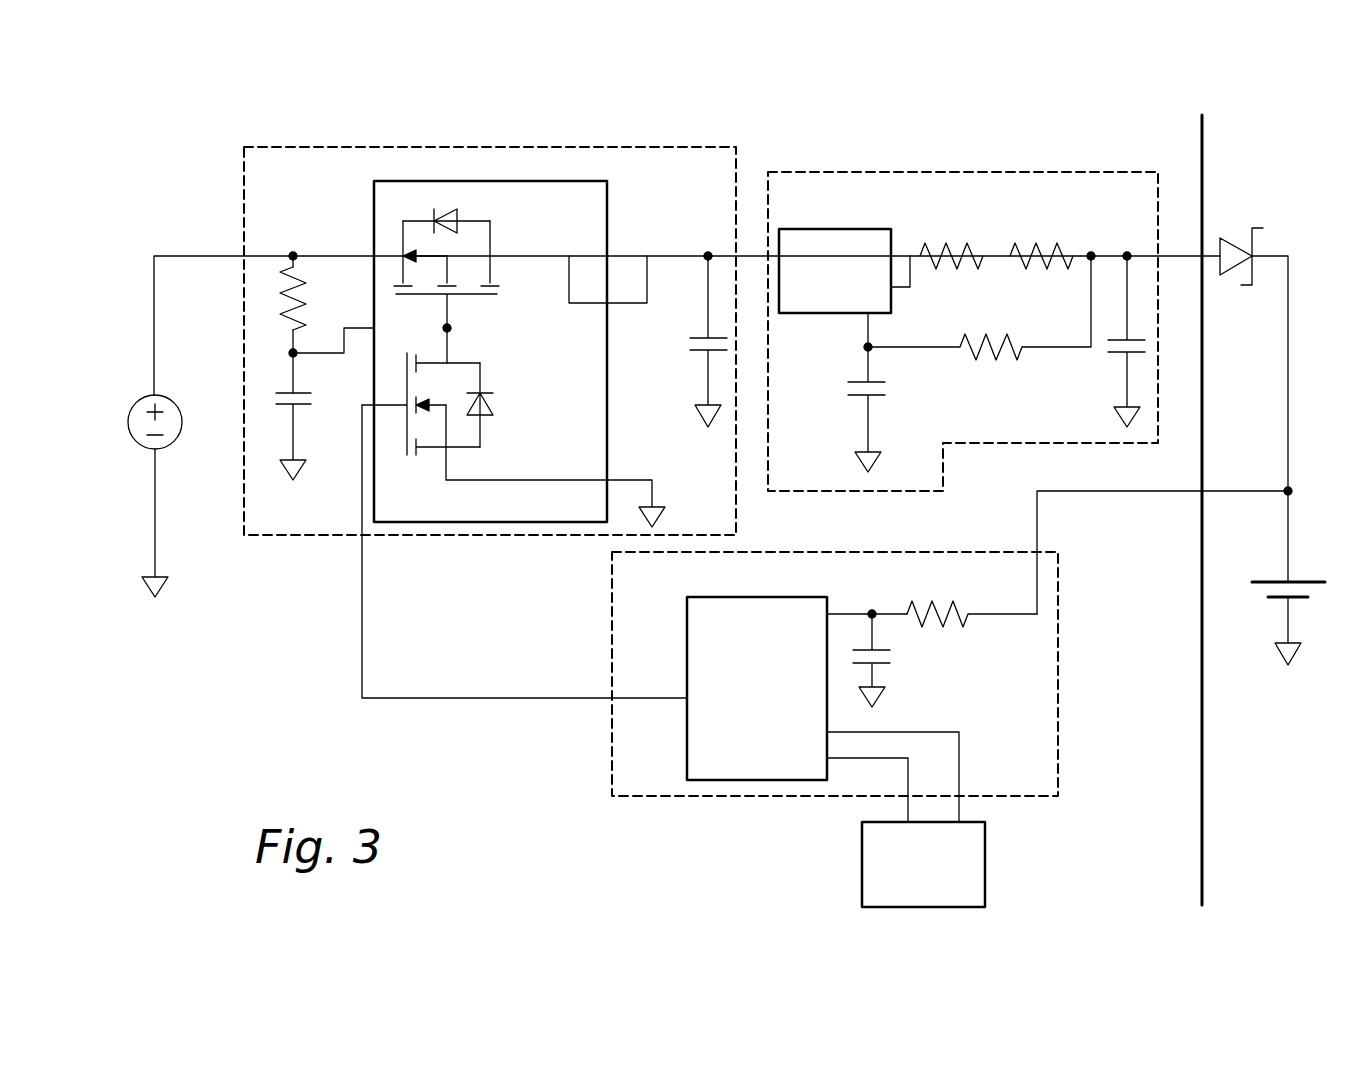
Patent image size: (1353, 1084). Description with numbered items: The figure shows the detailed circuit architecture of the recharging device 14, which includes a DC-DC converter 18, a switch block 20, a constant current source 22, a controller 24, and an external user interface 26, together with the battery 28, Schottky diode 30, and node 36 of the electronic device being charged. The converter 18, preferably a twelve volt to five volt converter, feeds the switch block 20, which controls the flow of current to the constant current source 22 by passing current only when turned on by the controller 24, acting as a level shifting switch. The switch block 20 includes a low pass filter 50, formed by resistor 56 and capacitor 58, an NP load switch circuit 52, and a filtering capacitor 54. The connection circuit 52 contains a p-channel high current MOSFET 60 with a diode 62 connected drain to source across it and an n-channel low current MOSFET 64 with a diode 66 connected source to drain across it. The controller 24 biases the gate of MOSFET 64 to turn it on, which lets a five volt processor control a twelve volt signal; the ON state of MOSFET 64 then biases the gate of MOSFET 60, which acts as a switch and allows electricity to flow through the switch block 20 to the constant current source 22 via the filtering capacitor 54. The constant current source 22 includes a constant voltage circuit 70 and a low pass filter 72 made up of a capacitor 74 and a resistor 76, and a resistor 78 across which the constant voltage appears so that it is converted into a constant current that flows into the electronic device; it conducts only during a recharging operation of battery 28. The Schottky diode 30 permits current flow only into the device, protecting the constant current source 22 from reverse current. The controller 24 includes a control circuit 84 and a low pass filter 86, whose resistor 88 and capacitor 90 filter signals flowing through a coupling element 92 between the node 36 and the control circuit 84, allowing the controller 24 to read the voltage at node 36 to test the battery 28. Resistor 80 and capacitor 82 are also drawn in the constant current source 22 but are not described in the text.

The recharging device 14 is at (595, 833).
The DC-DC converter 18 is at (172, 447).
The switch block 20 is at (405, 147).
The constant current source 22 is at (857, 172).
The controller 24 is at (1058, 658).
The external user interface 26 is at (985, 878).
The battery 28 is at (1272, 580).
The Schottky diode 30 is at (1237, 238).
The node 36 is at (1292, 490).
The low pass filter 50 is at (270, 357).
The NP load switch circuit 52 is at (607, 212).
The filtering capacitor 54 is at (690, 345).
The resistor 56 is at (298, 310).
The capacitor 58 is at (314, 400).
The p-channel high current MOSFET 60 is at (470, 298).
The diode 62 is at (443, 208).
The n-channel low current MOSFET 64 is at (403, 440).
The diode 66 is at (488, 400).
The constant voltage circuit 70 is at (825, 229).
The low pass filter 72 is at (895, 365).
The capacitor 74 is at (845, 390).
The resistor 76 is at (1003, 340).
The resistor 78 is at (945, 248).
The resistor 80 is at (1035, 250).
The capacitor 82 is at (1120, 353).
The control circuit 84 is at (687, 650).
The low pass filter 86 is at (970, 642).
The resistor 88 is at (930, 607).
The capacitor 90 is at (892, 656).
The coupling element 92 is at (1108, 492).